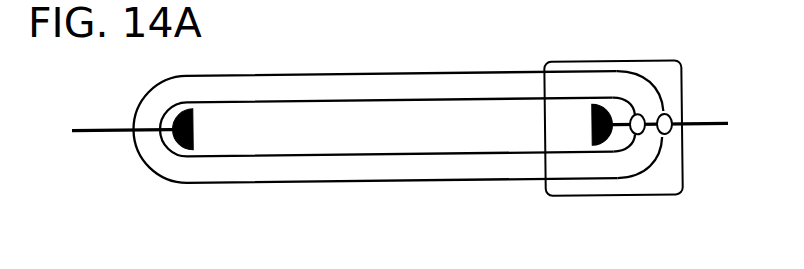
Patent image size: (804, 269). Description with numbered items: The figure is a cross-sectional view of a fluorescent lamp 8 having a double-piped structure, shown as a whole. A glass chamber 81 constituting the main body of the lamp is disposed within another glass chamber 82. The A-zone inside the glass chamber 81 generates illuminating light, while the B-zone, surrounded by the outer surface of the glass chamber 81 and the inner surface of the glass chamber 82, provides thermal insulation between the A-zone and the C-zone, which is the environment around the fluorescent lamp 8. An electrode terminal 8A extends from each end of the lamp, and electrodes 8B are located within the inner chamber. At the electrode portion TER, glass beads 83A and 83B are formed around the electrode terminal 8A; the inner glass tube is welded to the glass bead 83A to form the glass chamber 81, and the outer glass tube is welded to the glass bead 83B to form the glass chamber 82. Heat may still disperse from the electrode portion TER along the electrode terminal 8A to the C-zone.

The fluorescent lamp 8 is at (396, 117).
The electrode terminal 8A is at (117, 125).
The electrode 8B is at (195, 126).
The glass chamber 81 is at (283, 100).
The glass chamber 82 is at (384, 74).
The glass bead 83A is at (638, 127).
The glass bead 83B is at (664, 127).
The electrode portion TER is at (641, 63).